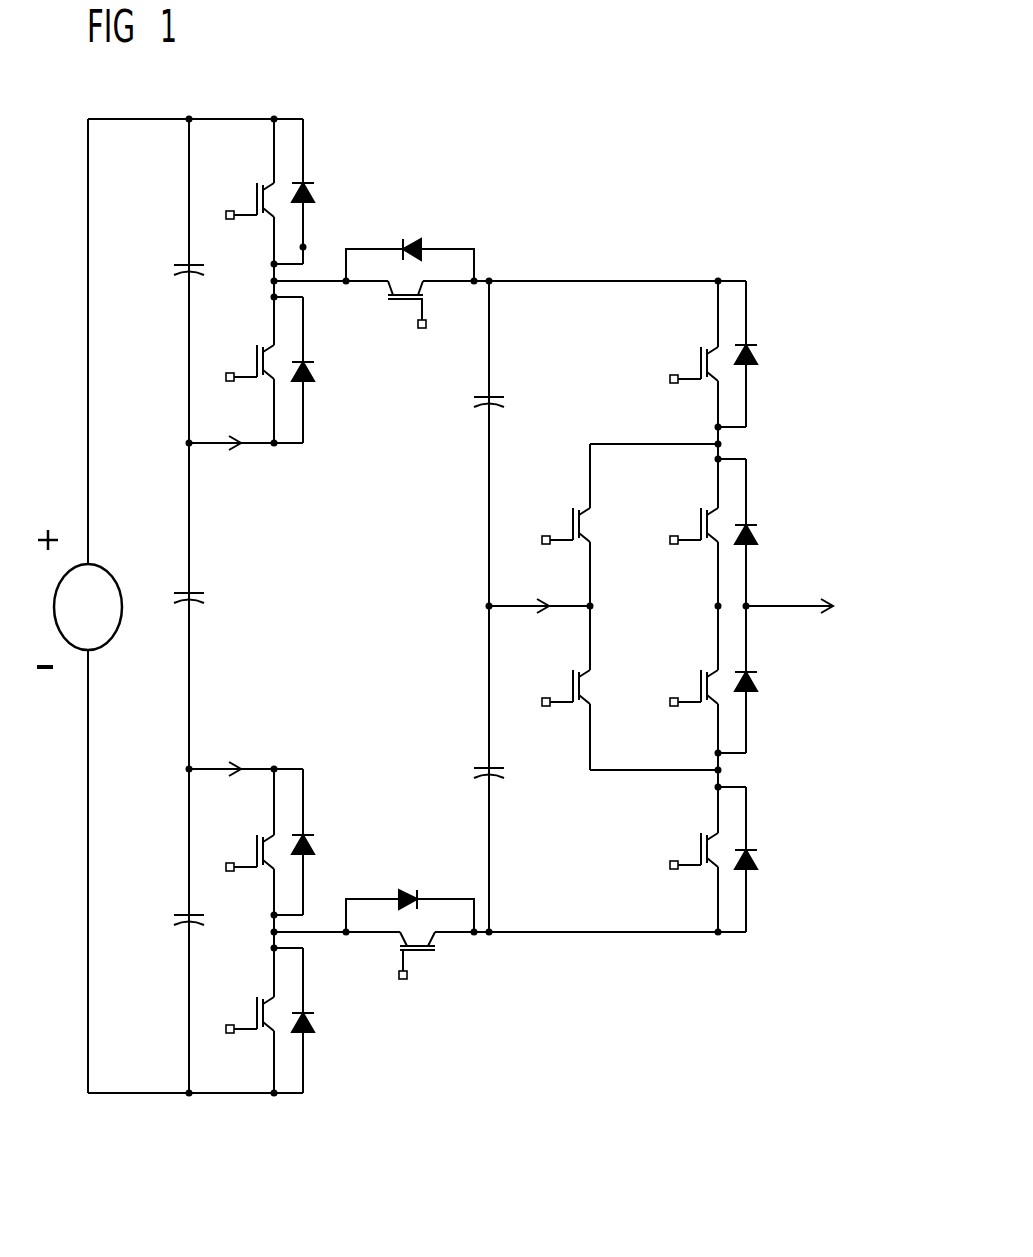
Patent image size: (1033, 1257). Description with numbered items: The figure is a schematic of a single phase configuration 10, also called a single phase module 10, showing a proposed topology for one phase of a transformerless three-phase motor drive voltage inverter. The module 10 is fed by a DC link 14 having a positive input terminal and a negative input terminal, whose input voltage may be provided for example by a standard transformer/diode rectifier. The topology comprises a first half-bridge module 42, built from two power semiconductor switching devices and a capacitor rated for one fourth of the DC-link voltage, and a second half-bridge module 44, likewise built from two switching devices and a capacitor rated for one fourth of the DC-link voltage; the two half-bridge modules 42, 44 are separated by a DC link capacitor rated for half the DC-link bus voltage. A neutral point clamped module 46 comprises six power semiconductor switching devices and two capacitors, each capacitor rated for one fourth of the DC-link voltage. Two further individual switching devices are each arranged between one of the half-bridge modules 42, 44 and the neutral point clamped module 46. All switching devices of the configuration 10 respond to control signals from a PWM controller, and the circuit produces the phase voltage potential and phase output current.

The single phase configuration 10 is at (683, 111).
The DC link 14 is at (88, 845).
The first half-bridge module 42 is at (302, 482).
The second half-bridge module 44 is at (301, 729).
The neutral point clamped module 46 is at (620, 260).